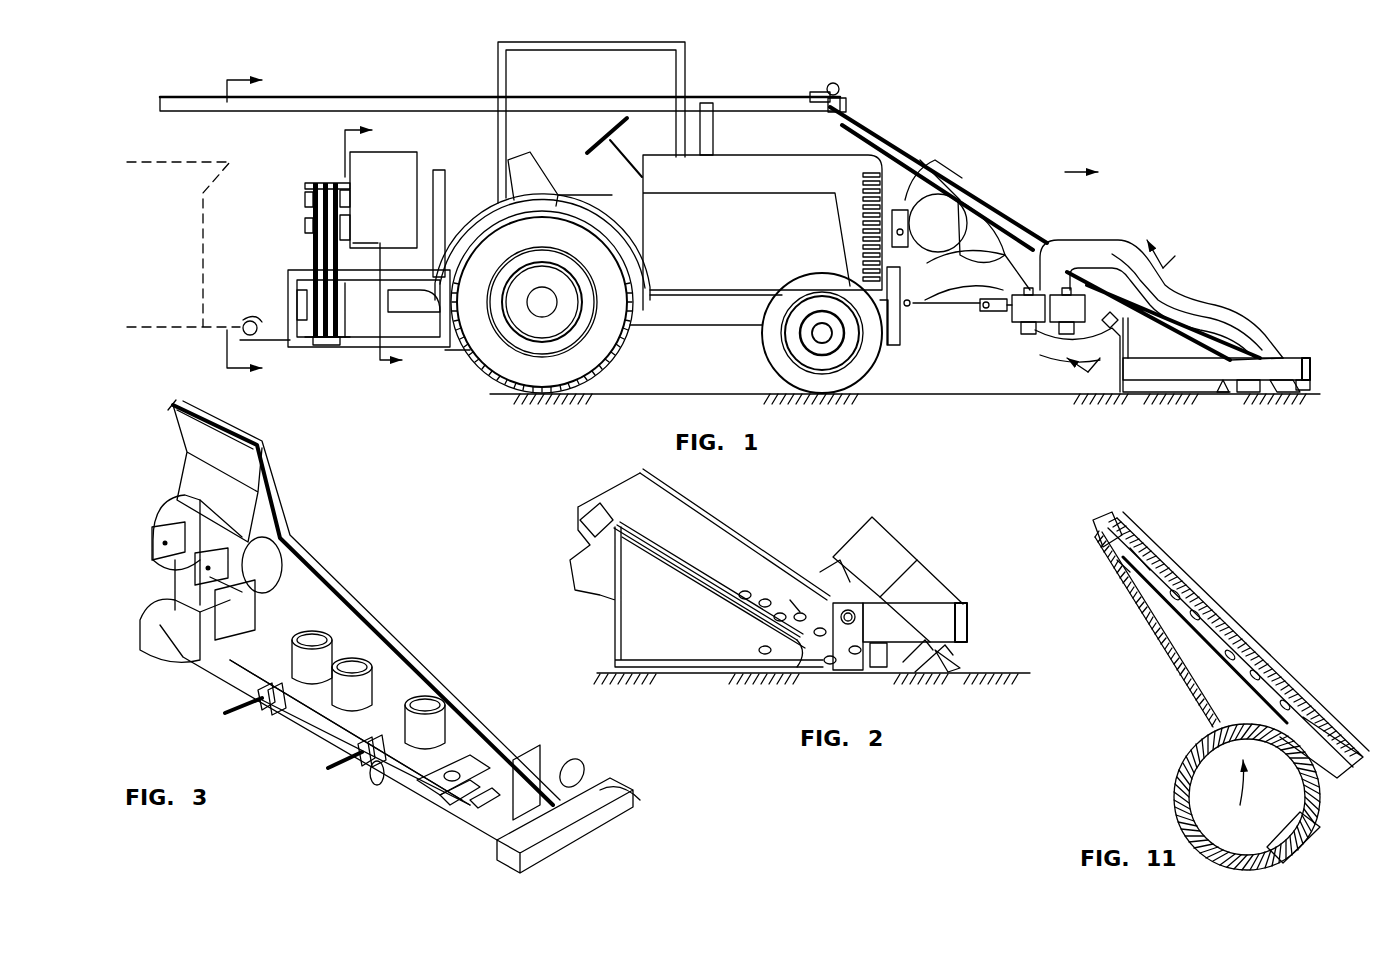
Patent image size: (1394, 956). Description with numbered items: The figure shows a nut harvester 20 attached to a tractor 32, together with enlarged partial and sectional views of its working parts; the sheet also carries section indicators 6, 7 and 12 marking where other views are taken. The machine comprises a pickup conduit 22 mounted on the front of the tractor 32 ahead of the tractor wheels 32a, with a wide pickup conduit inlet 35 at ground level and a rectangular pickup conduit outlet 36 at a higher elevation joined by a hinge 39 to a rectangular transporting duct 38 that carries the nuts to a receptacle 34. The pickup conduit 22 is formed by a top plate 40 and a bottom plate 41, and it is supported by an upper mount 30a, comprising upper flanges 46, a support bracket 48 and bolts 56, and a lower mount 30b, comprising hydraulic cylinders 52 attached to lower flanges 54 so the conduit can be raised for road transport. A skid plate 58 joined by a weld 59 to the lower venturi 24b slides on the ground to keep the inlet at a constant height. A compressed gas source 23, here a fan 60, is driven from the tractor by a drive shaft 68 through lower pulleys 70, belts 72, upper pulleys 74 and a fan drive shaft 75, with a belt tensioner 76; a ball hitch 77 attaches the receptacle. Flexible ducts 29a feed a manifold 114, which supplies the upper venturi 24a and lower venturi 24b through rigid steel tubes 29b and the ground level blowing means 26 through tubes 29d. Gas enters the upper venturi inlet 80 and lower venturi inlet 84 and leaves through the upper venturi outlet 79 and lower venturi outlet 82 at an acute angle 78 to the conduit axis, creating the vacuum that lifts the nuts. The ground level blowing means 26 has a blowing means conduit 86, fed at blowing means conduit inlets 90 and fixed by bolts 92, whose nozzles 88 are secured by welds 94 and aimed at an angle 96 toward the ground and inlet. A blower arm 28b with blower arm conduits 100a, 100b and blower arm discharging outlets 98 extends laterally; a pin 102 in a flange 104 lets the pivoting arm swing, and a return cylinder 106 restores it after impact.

In FIG. 1, the section line 6- 6 is at (231, 224).
In FIG. 1, the section line 7- 7 is at (1129, 315).
In FIG. 1, the section line 12- 12 is at (389, 246).
In FIG. 1, the nut harvester 20 is at (938, 98).
In FIG. 1, the pickup conduit 22 is at (970, 180).
In FIG. 3, the pickup conduit 22 is at (346, 576).
In FIG. 2, the pickup conduit 22 is at (673, 484).
In FIG. 11, the pickup conduit 22 is at (1292, 659).
In FIG. 1, the compressed gas source 23 is at (330, 158).
In FIG. 1, the upper venturi 24a is at (940, 170).
In FIG. 3, the upper venturi 24a is at (205, 485).
In FIG. 11, the upper venturi 24a is at (1203, 717).
In FIG. 1, the lower venturi 24b is at (1222, 394).
In FIG. 1, the ground level blowing means 26 is at (1313, 368).
In FIG. 3, the ground level blowing means 26 is at (642, 805).
In FIG. 2, the ground level blowing means 26 is at (975, 626).
In FIG. 3, the blower arm 28b is at (512, 765).
In FIG. 1, the flexible plastic ducts 29a is at (716, 320).
In FIG. 3, the flexible plastic ducts 29a is at (368, 668).
In FIG. 1, the rigid steel tubes 29b is at (1005, 250).
In FIG. 3, the rigid steel tubes 29b is at (178, 684).
In FIG. 1, the tubes 29d is at (1190, 292).
In FIG. 3, the tubes 29d is at (140, 606).
In FIG. 2, the tubes 29d is at (900, 529).
In FIG. 1, the upper mount 30a is at (918, 186).
In FIG. 1, the lower mount 30b is at (915, 306).
In FIG. 1, the tractor 32 is at (658, 400).
In FIG. 1, the tractor wheels 32a is at (500, 378).
In FIG. 1, the receptacle 34 is at (186, 160).
In FIG. 2, the pickup conduit inlet 35 is at (836, 562).
In FIG. 1, the pickup conduit outlet 36 is at (858, 99).
In FIG. 3, the pickup conduit outlet 36 is at (276, 450).
In FIG. 1, the rectangular transporting duct 38 is at (776, 97).
In FIG. 1, the hinge 39 is at (846, 84).
In FIG. 11, the top plate 40 is at (1166, 562).
In FIG. 11, the bottom plate 41 is at (1131, 574).
In FIG. 3, the upper flanges 46 is at (197, 572).
In FIG. 1, the support bracket 48 is at (896, 332).
In FIG. 3, the hydraulic cylinders 52 is at (232, 708).
In FIG. 3, the lower flanges 54 is at (264, 716).
In FIG. 1, the bolts 56 is at (902, 240).
In FIG. 3, the bolts 56 is at (378, 787).
In FIG. 1, the skid plate 58 is at (1166, 394).
In FIG. 2, the weld 59 is at (797, 652).
In FIG. 1, the fan 60 is at (418, 160).
In FIG. 1, the drive shaft 68 is at (348, 296).
In FIG. 1, the lower pulleys 70 is at (316, 342).
In FIG. 1, the belts 72 is at (308, 243).
In FIG. 1, the upper pulleys 74 is at (306, 185).
In FIG. 1, the fan drive shaft 75 is at (445, 190).
In FIG. 1, the belt tensioner 76 is at (304, 221).
In FIG. 1, the ball hitch 77 is at (256, 336).
In FIG. 2, the acute angle 78 is at (730, 572).
In FIG. 11, the acute angle 78 is at (1100, 526).
In FIG. 11, the upper venturi outlet 79 is at (1185, 646).
In FIG. 1, the upper venturi inlet 80 is at (975, 240).
In FIG. 11, the upper venturi inlet 80 is at (1316, 830).
In FIG. 2, the lower venturi outlet 82 is at (795, 600).
In FIG. 1, the lower venturi inlet 84 is at (1122, 340).
In FIG. 3, the lower venturi inlet 84 is at (312, 742).
In FIG. 1, the blowing means conduit 86 is at (1302, 356).
In FIG. 2, the blowing means conduit 86 is at (961, 606).
In FIG. 1, the nozzles 88 is at (1285, 395).
In FIG. 2, the nozzles 88 is at (962, 667).
In FIG. 1, the blowing means conduit inlets 90 is at (1282, 340).
In FIG. 2, the blowing means conduit inlets 90 is at (946, 582).
In FIG. 2, the bolts 92 is at (848, 627).
In FIG. 1, the welds 94 is at (1300, 386).
In FIG. 2, the welds 94 is at (955, 651).
In FIG. 2, the angle 96 is at (878, 667).
In FIG. 1, the blower arm discharging outlets 98 is at (1022, 326).
In FIG. 3, the blower arm conduit 100a is at (480, 822).
In FIG. 3, the blower arm conduit 100b is at (574, 768).
In FIG. 3, the pin 102 is at (440, 800).
In FIG. 3, the flange 104 is at (420, 808).
In FIG. 1, the return cylinder 106 is at (1050, 240).
In FIG. 3, the manifold 114 is at (182, 640).